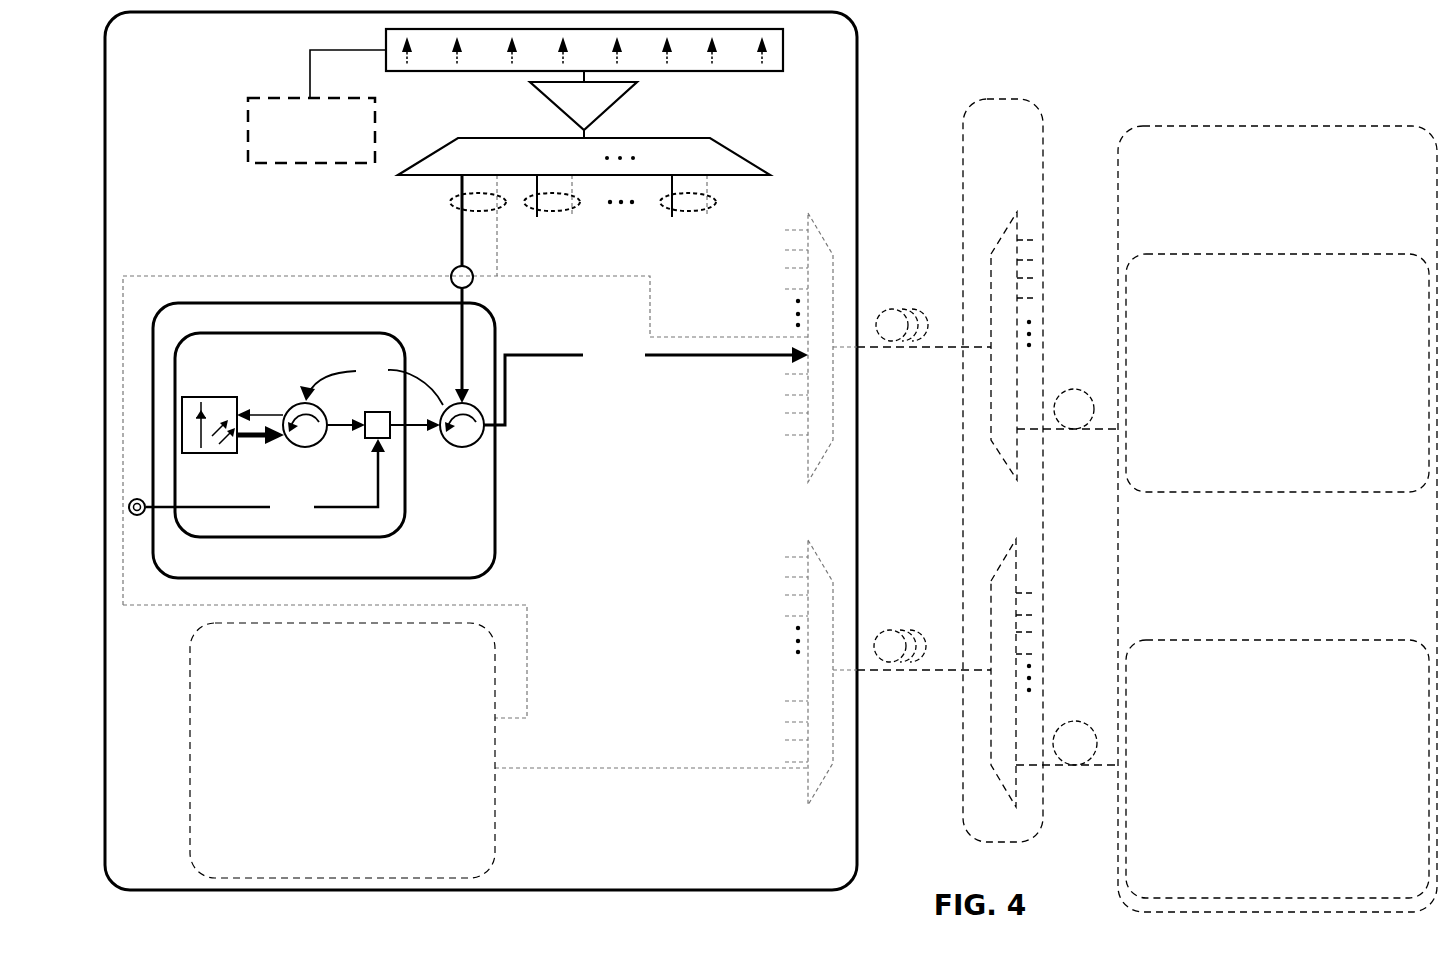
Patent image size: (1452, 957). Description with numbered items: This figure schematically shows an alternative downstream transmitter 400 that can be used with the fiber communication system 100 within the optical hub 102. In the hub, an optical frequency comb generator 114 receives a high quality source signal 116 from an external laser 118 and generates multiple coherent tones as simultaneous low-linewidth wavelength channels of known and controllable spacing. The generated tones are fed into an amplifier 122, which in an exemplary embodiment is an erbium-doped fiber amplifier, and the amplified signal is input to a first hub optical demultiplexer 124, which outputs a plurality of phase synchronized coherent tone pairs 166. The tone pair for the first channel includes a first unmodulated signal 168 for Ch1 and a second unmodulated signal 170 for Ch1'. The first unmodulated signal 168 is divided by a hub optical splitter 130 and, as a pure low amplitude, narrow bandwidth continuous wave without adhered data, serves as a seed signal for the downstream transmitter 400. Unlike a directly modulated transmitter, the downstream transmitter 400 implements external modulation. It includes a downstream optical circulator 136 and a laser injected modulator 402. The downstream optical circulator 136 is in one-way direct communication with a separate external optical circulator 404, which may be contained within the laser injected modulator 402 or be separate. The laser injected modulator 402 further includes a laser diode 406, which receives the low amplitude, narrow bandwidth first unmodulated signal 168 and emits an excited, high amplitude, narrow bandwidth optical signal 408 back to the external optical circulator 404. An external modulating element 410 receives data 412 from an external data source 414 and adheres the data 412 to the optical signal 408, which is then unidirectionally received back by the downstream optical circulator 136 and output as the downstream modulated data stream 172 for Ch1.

The fiber communication system 100 is at (912, 90).
The optical hub 102 is at (112, 47).
The optical frequency comb generator 114 is at (760, 72).
The high quality source signal 116 is at (310, 70).
The external laser 118 is at (296, 139).
The amplifier 122 is at (569, 108).
The first hub optical demultiplexer 124 is at (742, 160).
The hub optical splitter 130 is at (473, 283).
The downstream optical circulator 136 is at (462, 450).
The phase synchronized coherent tone pair 166 is at (426, 195).
The first unmodulated signal 168 is at (462, 234).
The second unmodulated signal 170 is at (652, 300).
The downstream modulated data stream 172 is at (681, 363).
The downstream transmitter 400 is at (423, 569).
The laser injected modulator 402 is at (405, 520).
The external optical circulator 404 is at (297, 403).
The laser diode 406 is at (212, 455).
The optical signal 408 is at (258, 446).
The external modulating element 410 is at (372, 412).
The data 412 is at (368, 508).
The external data source 414 is at (128, 514).